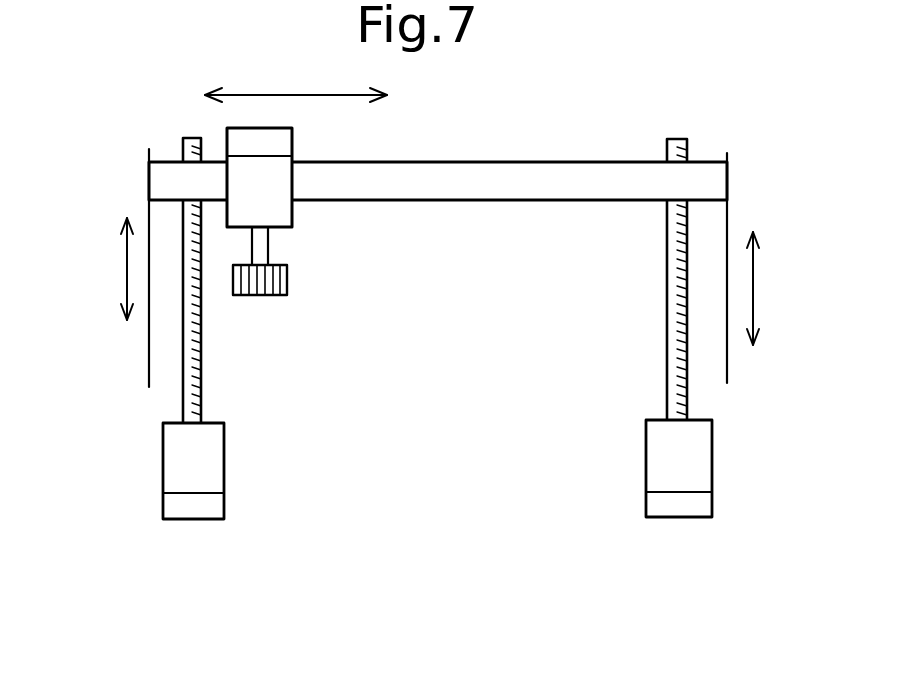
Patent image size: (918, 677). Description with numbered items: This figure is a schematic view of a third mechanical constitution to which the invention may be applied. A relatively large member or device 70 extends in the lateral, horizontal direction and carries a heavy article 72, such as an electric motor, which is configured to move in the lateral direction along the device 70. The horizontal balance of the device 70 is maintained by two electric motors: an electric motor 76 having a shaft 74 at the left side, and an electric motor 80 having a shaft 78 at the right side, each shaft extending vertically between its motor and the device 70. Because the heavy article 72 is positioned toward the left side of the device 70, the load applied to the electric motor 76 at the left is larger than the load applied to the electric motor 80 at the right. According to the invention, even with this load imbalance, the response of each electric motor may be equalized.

The device 70 is at (613, 177).
The heavy article 72 is at (280, 213).
The shaft 74 is at (203, 358).
The electric motor 76 is at (193, 503).
The shaft 78 is at (667, 367).
The electric motor 80 is at (678, 508).